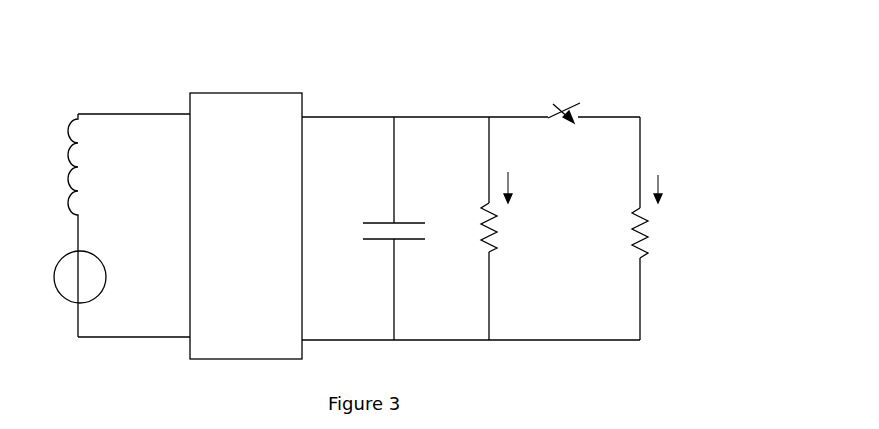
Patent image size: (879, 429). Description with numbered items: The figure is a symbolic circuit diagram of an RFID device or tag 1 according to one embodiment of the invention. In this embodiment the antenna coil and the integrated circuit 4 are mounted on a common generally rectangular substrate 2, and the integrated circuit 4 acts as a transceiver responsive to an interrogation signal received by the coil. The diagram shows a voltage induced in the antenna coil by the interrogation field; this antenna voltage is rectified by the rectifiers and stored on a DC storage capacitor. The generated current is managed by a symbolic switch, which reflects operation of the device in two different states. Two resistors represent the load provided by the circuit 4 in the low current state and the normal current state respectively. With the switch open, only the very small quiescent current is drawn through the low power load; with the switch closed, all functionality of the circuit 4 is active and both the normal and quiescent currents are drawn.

The integrated circuit 4 is at (429, 182).
The RFID device or tag 1 is at (699, 228).
The substrate 2 is at (525, 228).